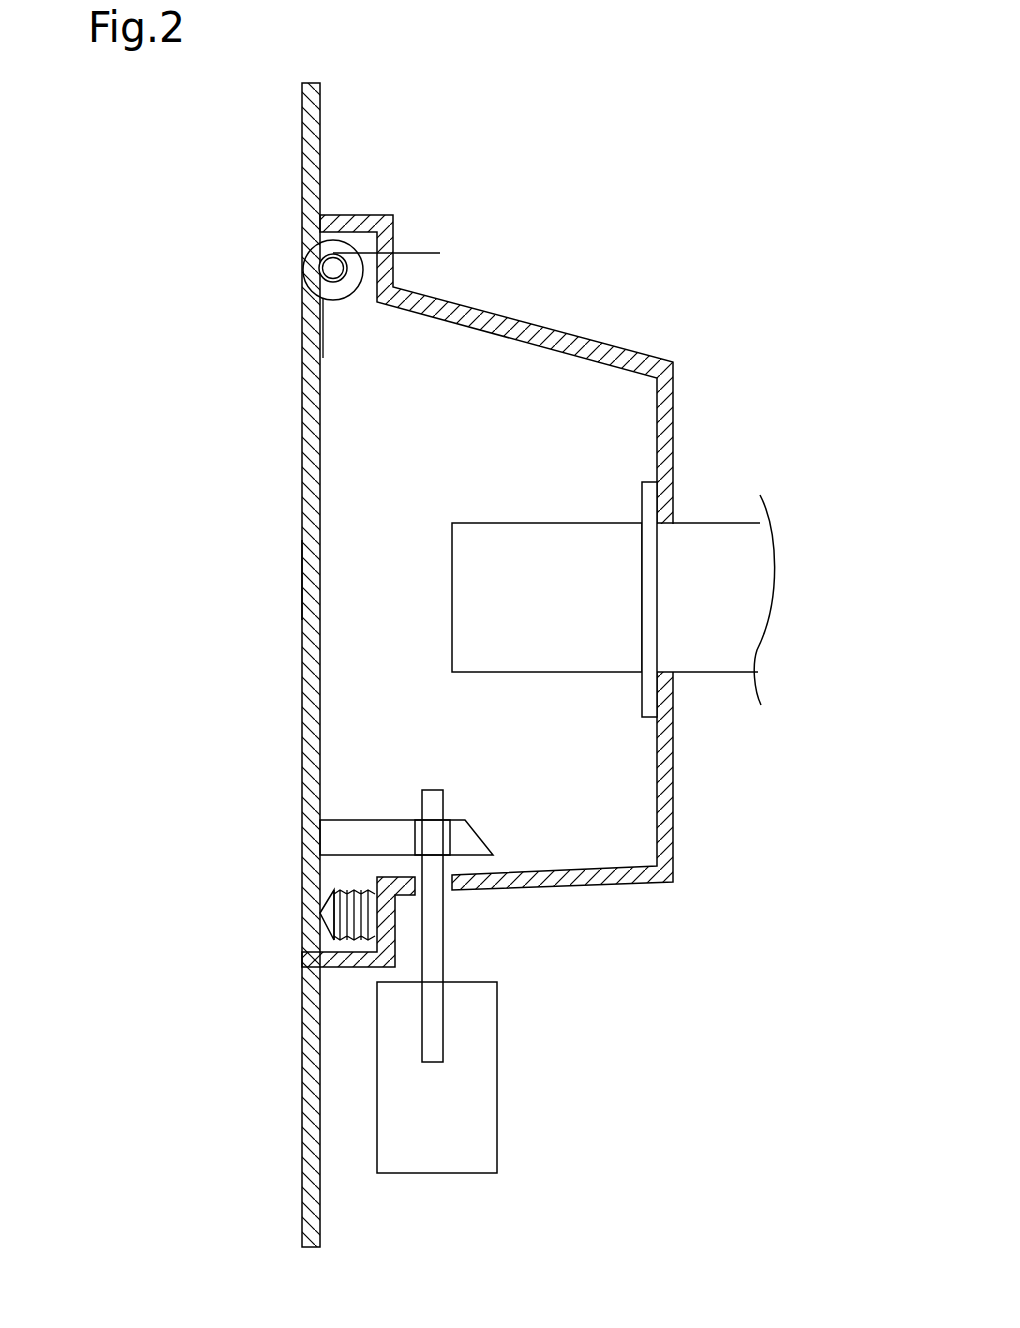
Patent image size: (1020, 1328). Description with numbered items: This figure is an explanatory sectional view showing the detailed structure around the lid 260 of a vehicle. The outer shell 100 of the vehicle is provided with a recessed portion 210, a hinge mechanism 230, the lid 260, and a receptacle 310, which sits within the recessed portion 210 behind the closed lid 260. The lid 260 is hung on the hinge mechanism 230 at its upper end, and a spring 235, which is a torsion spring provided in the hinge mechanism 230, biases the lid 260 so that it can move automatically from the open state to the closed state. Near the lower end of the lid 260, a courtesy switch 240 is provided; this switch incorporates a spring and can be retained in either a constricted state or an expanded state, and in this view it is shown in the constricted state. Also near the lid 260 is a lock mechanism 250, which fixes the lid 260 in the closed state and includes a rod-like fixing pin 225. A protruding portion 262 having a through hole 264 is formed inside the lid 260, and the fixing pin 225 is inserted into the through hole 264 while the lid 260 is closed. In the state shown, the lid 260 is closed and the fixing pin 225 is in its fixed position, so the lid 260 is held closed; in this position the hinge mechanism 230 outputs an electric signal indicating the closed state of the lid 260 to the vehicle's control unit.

The outer shell 100 is at (302, 118).
The recessed portion 210 is at (657, 440).
The fixing pin 225 is at (440, 790).
The hinge mechanism 230 is at (305, 256).
The spring 235 is at (312, 262).
The courtesy switch 240 is at (320, 943).
The lock mechanism 250 is at (497, 1097).
The lid 260 is at (302, 583).
The protruding portion 262 is at (470, 840).
The through hole 264 is at (446, 826).
The receptacle 310 is at (450, 585).